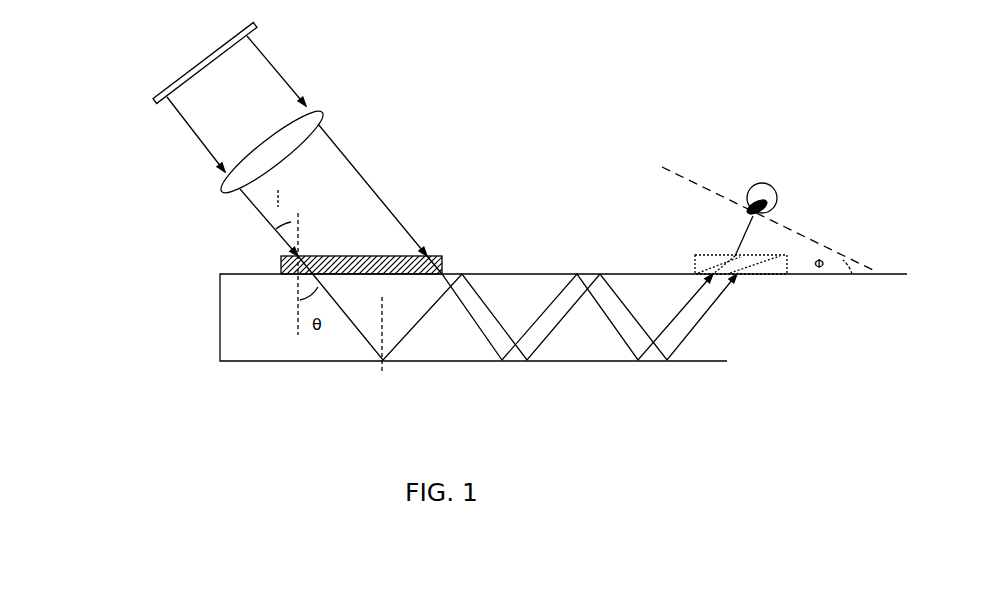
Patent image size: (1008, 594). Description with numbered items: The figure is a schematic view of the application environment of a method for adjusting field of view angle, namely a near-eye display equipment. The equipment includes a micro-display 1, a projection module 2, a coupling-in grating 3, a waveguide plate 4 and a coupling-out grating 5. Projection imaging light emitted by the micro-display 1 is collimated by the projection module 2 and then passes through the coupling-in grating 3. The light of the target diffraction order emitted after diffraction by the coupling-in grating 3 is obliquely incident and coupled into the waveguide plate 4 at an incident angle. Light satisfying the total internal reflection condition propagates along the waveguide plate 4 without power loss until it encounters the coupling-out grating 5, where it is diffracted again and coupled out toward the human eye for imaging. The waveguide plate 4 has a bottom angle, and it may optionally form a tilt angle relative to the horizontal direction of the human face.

The micro-display 1 is at (147, 99).
The projection module 2 is at (204, 190).
The coupling-in grating 3 is at (447, 272).
The waveguide plate 4 is at (221, 318).
The coupling-out grating 5 is at (777, 276).